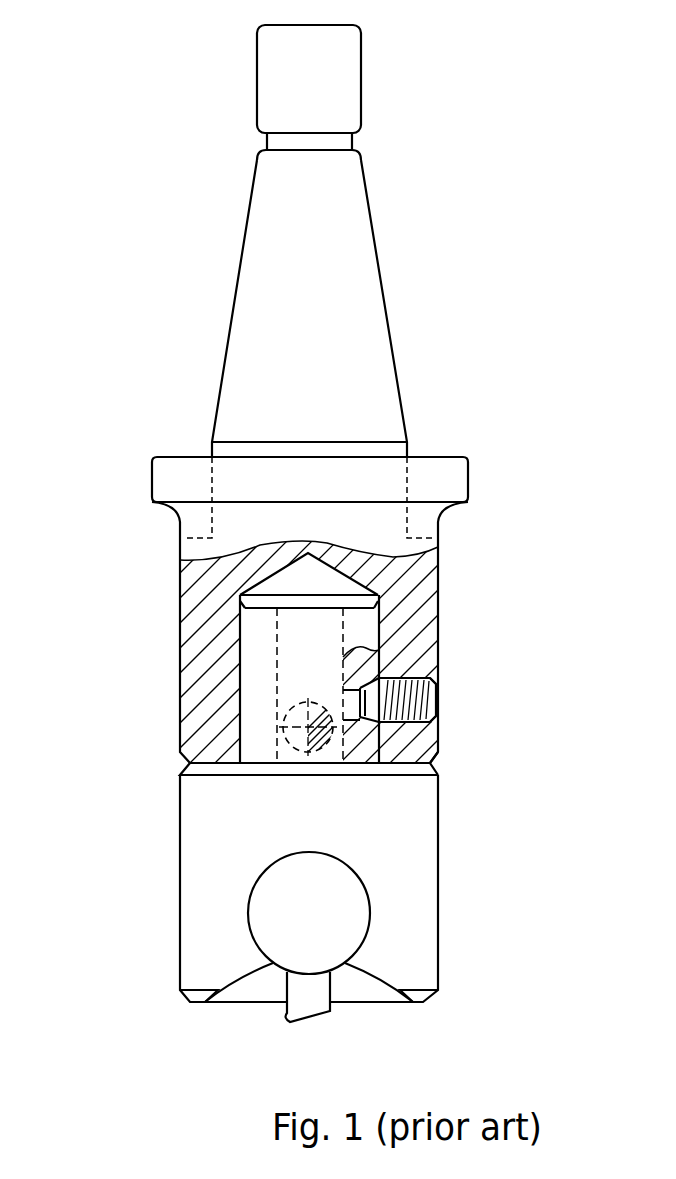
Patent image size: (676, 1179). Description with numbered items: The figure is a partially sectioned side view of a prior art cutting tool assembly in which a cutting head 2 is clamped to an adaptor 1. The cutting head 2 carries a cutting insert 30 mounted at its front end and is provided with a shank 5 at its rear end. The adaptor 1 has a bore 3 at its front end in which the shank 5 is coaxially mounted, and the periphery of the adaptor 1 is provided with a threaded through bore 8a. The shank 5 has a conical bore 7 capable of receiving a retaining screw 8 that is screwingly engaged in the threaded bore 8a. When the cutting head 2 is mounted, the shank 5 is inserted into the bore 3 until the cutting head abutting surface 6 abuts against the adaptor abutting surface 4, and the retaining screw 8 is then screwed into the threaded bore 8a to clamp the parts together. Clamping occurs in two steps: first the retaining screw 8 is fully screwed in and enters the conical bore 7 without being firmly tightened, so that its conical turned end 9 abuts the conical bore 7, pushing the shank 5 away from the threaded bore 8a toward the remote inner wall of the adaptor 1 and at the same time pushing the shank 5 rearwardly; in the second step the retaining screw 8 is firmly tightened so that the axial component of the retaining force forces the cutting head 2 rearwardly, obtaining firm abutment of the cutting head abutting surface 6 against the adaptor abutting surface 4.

The adaptor 1 is at (420, 583).
The cutting head 2 is at (213, 865).
The bore 3 is at (240, 599).
The adaptor abutting surface 4 is at (180, 773).
The shank 5 is at (257, 667).
The cutting head abutting surface 6 is at (438, 750).
The conical bore 7 is at (333, 723).
The retaining screw 8 is at (423, 693).
The threaded through bore 8a is at (440, 684).
The conical turned end 9 is at (383, 676).
The cutting insert 30 is at (310, 1013).